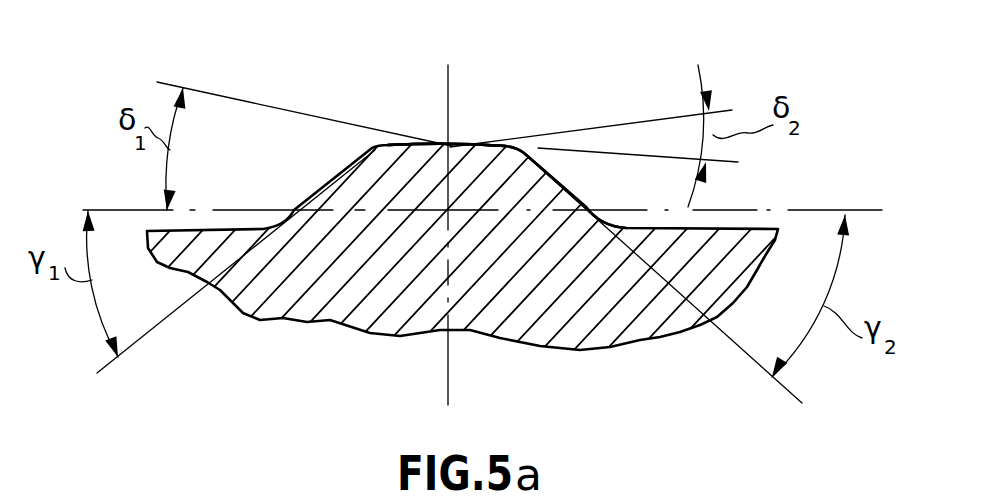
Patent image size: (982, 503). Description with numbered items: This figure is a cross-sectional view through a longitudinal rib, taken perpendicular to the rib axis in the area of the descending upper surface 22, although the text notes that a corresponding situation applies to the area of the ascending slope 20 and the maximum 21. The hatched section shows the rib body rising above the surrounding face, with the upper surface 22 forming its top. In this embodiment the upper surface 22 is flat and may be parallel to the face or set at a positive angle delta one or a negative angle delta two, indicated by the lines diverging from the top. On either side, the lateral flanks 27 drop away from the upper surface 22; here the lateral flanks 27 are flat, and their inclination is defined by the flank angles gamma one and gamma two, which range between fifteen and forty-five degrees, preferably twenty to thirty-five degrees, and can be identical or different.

The ascending slope 20 is at (470, 132).
The edge (maximum) 21 is at (470, 132).
The descending upper surface 22 is at (470, 132).
The lateral flanks 27 is at (572, 192).